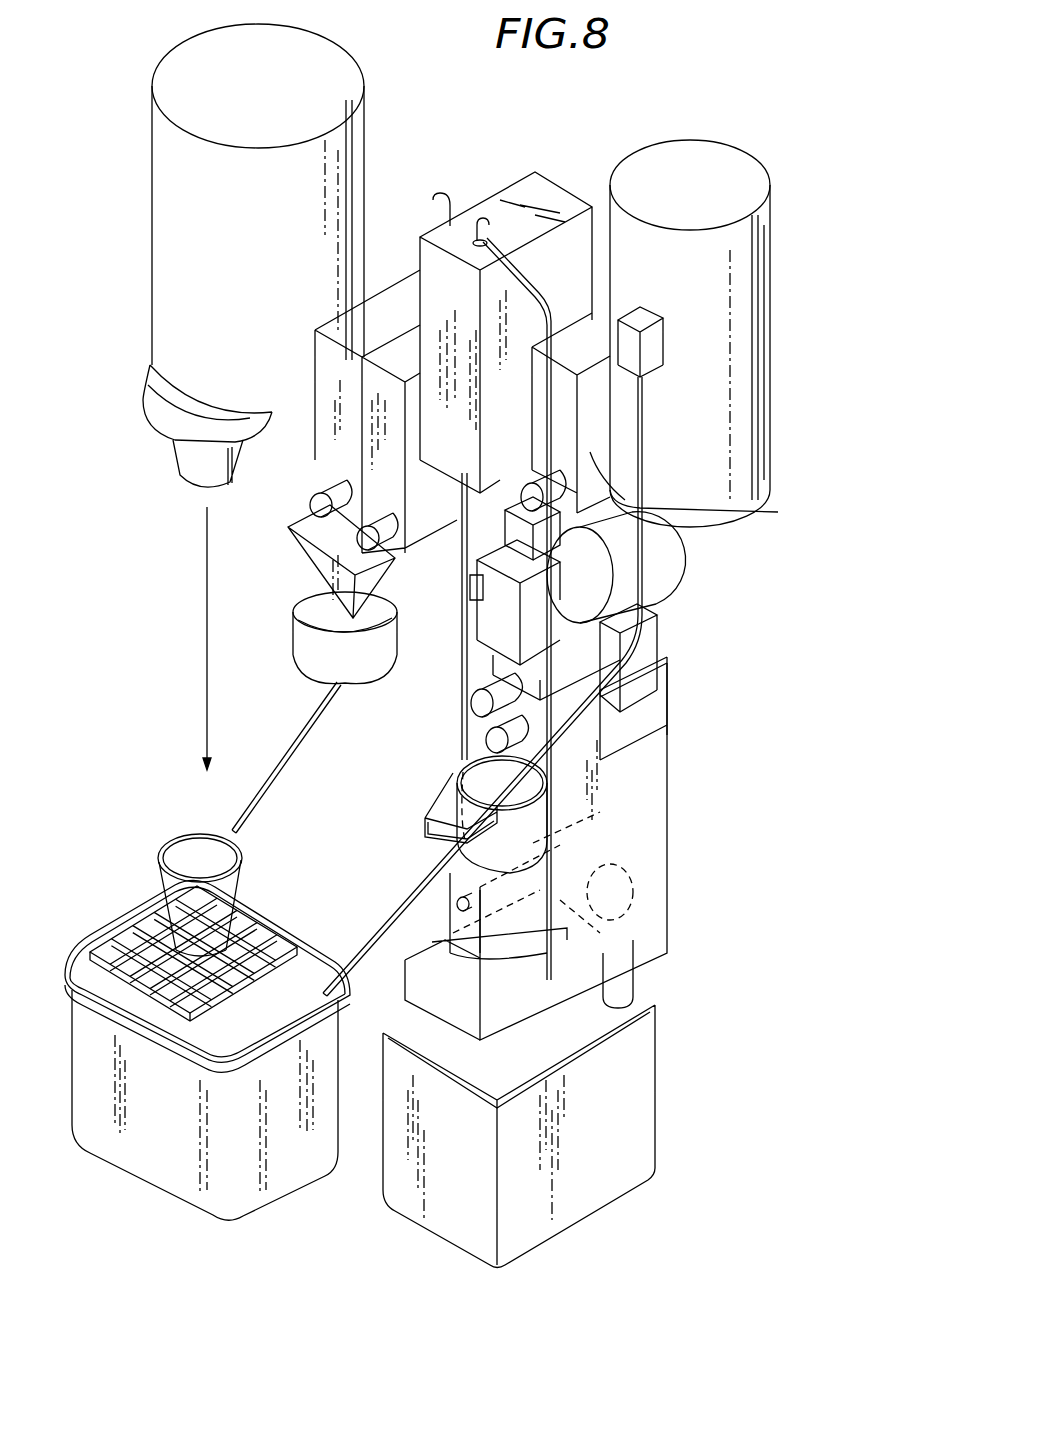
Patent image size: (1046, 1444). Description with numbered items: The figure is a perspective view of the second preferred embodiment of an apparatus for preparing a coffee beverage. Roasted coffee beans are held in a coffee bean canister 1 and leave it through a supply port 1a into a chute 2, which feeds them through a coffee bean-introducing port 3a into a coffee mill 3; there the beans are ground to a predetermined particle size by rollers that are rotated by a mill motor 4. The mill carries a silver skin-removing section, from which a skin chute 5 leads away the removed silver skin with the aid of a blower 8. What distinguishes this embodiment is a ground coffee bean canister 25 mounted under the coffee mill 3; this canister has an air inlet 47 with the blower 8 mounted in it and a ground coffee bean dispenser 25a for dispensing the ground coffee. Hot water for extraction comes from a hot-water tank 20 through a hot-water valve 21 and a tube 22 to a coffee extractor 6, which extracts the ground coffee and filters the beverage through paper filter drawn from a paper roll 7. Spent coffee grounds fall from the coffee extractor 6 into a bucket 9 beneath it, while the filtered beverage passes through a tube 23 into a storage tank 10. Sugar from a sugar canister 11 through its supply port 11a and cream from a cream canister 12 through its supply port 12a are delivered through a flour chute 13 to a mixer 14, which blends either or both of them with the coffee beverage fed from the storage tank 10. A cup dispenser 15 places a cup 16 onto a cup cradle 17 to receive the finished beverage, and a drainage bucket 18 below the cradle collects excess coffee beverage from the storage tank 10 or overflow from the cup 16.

The coffee bean canister 1 is at (600, 330).
The supply port 1a is at (545, 488).
The chute 2 is at (720, 527).
The coffee mill 3 is at (483, 593).
The coffee bean-introducing port 3a is at (478, 630).
The mill motor 4 is at (666, 568).
The skin chute 5 is at (627, 703).
The coffee extractor 6 is at (653, 908).
The paper roll 7 is at (580, 860).
The blower 8 is at (518, 695).
The bucket 9 is at (643, 1130).
The storage tank 10 is at (543, 190).
The sugar canister 11 is at (343, 325).
The supply port 11a is at (330, 496).
The cream canister 12 is at (407, 343).
The supply port 12a is at (363, 493).
The flour chute 13 is at (317, 565).
The mixer 14 is at (297, 643).
The cup dispenser 15 is at (345, 175).
The cup 16 is at (220, 900).
The cup cradle 17 is at (128, 930).
The drainage bucket 18 is at (138, 1150).
The hot-water tank 20 is at (727, 248).
The hot-water valve 21 is at (647, 323).
The tube 22 is at (640, 481).
The tube 23 is at (510, 262).
The ground coffee bean canister 25 is at (637, 653).
The ground coffee bean dispenser 25a is at (512, 735).
The air inlet 47 is at (473, 707).